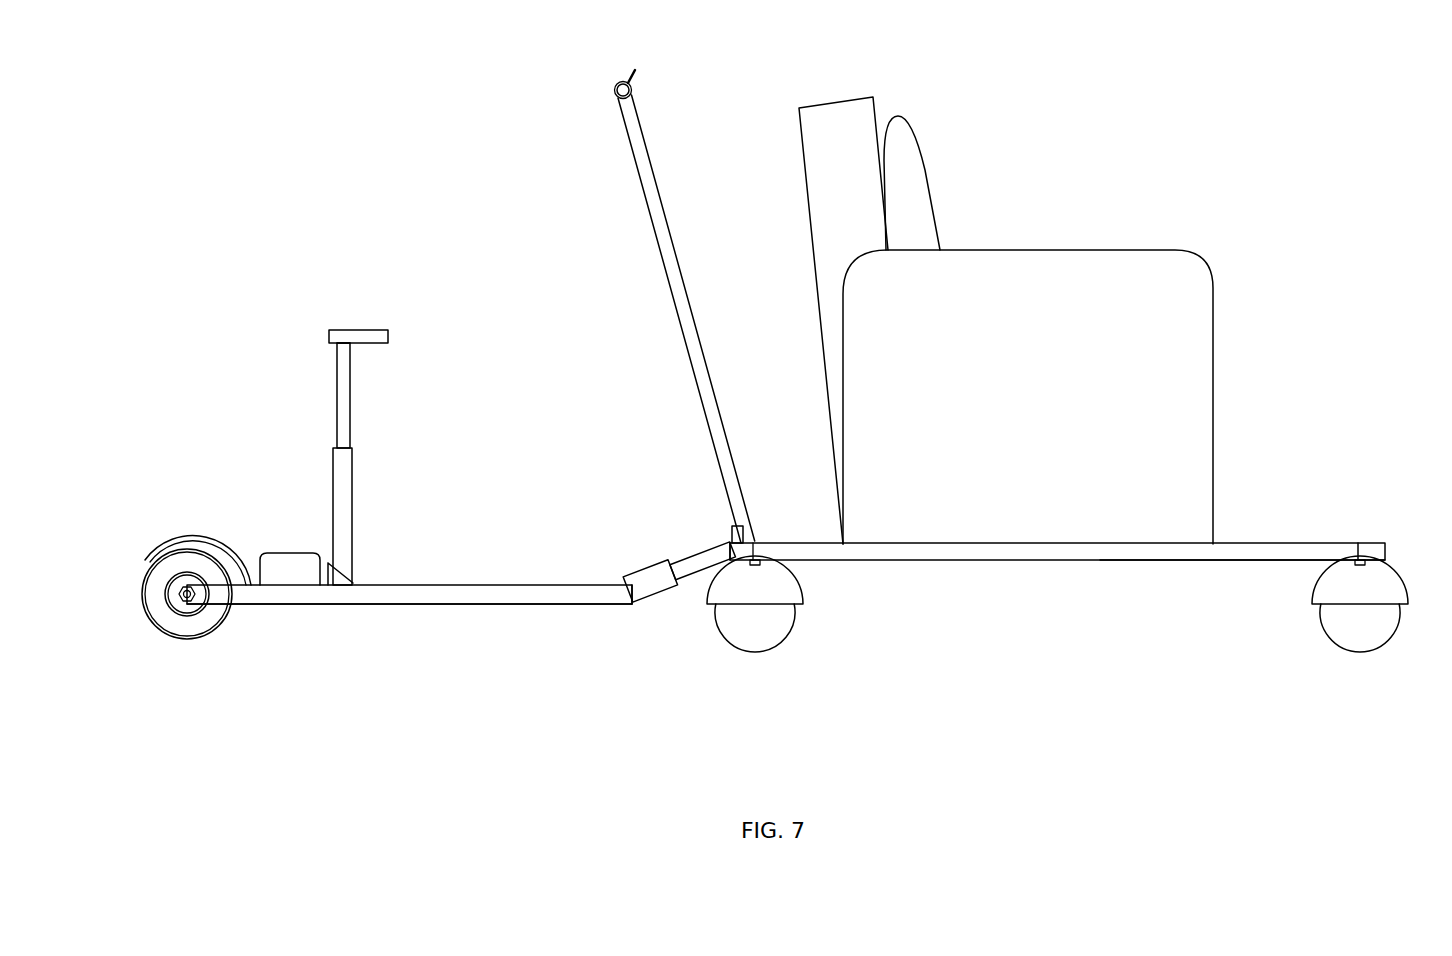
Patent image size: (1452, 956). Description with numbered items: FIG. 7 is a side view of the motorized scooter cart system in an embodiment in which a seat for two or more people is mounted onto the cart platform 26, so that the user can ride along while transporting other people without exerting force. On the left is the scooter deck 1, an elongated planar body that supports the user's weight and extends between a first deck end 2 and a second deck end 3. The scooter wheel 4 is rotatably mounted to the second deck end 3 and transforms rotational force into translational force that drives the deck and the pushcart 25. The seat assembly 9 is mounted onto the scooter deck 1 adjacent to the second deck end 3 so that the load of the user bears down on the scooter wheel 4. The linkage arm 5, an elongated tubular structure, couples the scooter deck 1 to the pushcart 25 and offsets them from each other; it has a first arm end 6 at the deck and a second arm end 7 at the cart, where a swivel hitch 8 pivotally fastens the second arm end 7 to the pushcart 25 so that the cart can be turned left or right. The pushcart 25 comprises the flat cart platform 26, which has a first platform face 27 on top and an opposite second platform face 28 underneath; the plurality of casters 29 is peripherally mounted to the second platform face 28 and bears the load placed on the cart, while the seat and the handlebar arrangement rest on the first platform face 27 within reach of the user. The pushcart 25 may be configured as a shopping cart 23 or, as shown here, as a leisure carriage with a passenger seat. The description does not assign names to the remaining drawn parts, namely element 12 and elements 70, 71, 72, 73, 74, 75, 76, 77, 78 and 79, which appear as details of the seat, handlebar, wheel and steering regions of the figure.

The scooter deck 1 is at (238, 602).
The first deck end 2 is at (628, 607).
The second deck end 3 is at (666, 572).
The scooter wheel 4 is at (148, 629).
The linkage arm 5 is at (756, 545).
The first arm end 6 is at (640, 578).
The second arm end 7 is at (450, 605).
The swivel hitch 8 is at (733, 528).
The seat assembly 9 is at (352, 395).
The seat 12 is at (1048, 312).
The shopping cart 23 is at (1168, 130).
The pushcart 25 is at (1359, 543).
The cart platform 26 is at (1084, 559).
The first platform face 27 is at (195, 533).
The second platform face 28 is at (1216, 561).
The casters 29 is at (768, 632).
The handlebar grip 70 is at (388, 336).
The handlebar joint 71 is at (335, 347).
The stem base joint 72 is at (350, 579).
The pivot knob 73 is at (615, 93).
The push handle 74 is at (630, 276).
The locking pin 75 is at (634, 71).
The battery box 76 is at (300, 553).
The steering stem 77 is at (346, 428).
The axle 78 is at (182, 594).
The inner fender 79 is at (170, 545).